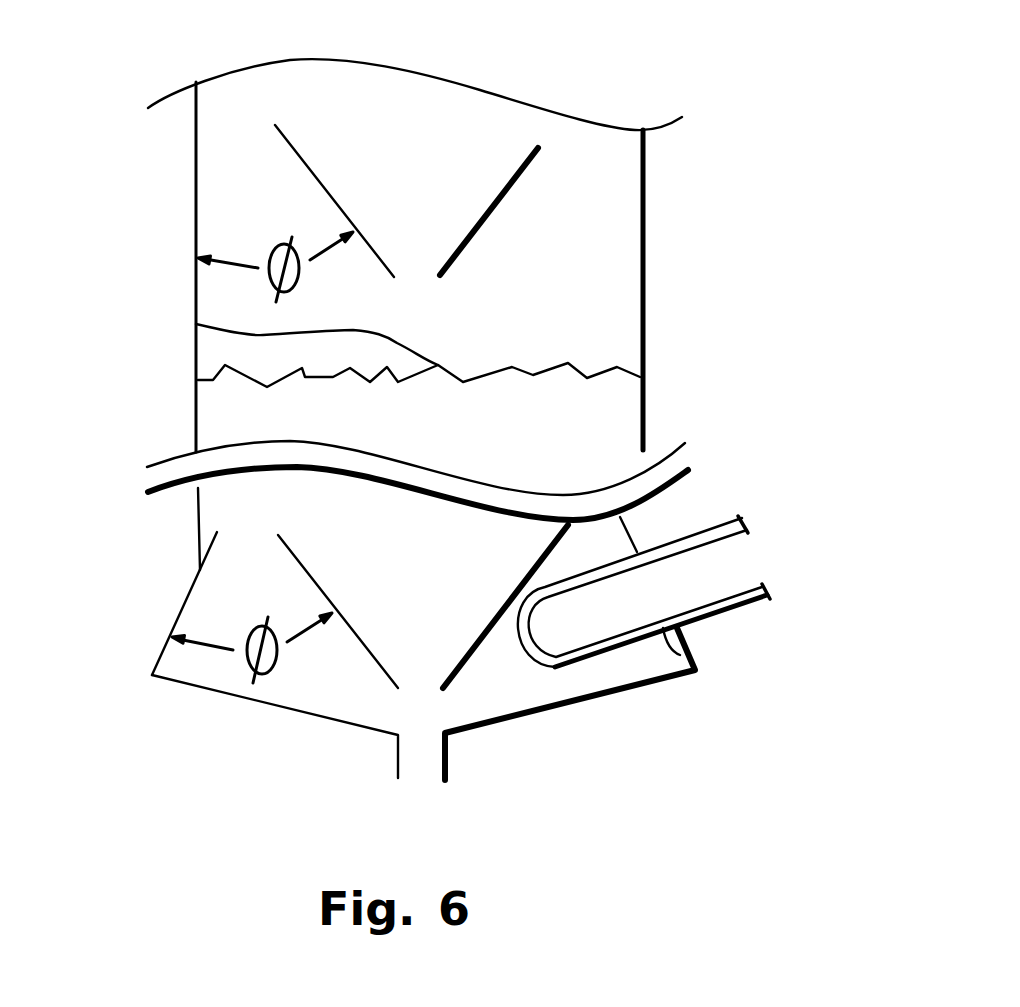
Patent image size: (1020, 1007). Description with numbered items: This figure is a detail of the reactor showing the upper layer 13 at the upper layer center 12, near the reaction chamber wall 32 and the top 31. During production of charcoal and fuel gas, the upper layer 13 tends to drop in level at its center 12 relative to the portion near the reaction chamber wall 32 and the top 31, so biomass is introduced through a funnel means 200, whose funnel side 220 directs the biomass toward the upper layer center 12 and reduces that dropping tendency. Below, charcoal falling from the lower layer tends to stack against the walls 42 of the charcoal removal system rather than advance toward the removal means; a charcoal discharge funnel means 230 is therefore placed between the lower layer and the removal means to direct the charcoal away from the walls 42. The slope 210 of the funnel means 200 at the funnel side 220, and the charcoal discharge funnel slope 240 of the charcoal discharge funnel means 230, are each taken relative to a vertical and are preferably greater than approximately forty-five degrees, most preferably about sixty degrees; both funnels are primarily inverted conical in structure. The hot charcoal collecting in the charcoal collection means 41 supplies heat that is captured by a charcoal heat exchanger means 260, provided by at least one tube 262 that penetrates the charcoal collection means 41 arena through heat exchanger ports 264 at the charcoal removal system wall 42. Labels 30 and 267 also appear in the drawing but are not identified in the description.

The upper layer center 12 is at (196, 324).
The upper layer 13 is at (565, 366).
The upper housing portion 30 is at (196, 362).
The top 31 is at (196, 160).
The reaction chamber wall 32 is at (643, 305).
The charcoal collection means 41 is at (207, 688).
The charcoal removal system wall 42 is at (173, 617).
The funnel means 200 is at (512, 177).
The slope of the funnel means 210 is at (277, 247).
The funnel side 220 is at (463, 250).
The charcoal discharge funnel means 230 is at (312, 582).
The charcoal discharge funnel slope 240 is at (255, 620).
The charcoal heat exchanger means 260 is at (707, 647).
The tube 262 is at (692, 657).
The heat exchanger ports 264 is at (747, 520).
The base plate 267 is at (640, 647).